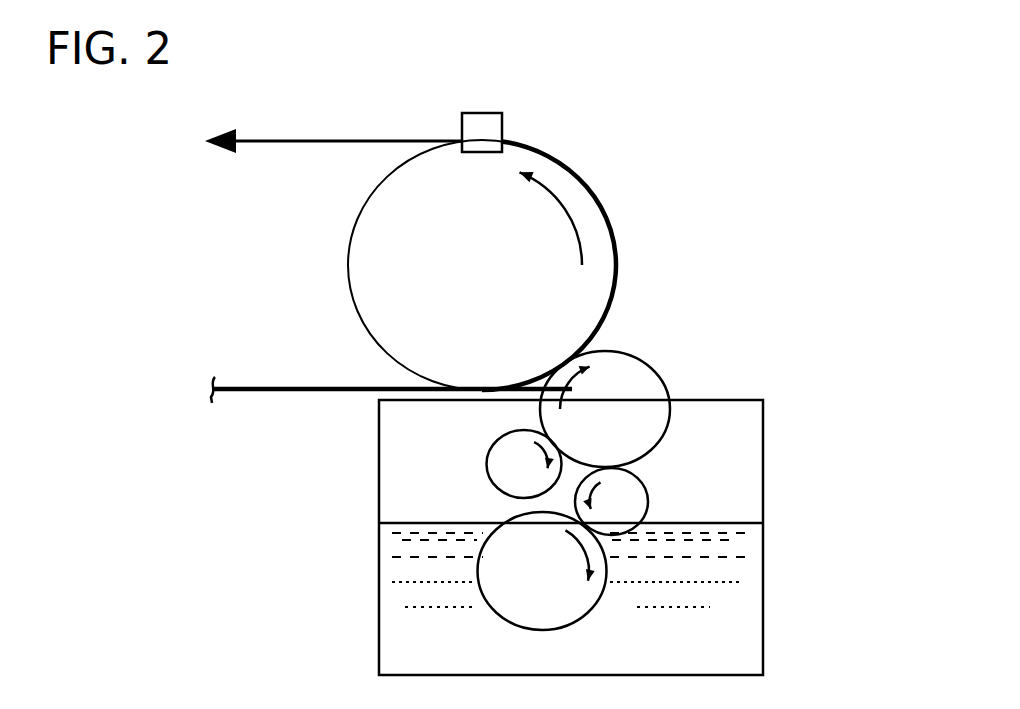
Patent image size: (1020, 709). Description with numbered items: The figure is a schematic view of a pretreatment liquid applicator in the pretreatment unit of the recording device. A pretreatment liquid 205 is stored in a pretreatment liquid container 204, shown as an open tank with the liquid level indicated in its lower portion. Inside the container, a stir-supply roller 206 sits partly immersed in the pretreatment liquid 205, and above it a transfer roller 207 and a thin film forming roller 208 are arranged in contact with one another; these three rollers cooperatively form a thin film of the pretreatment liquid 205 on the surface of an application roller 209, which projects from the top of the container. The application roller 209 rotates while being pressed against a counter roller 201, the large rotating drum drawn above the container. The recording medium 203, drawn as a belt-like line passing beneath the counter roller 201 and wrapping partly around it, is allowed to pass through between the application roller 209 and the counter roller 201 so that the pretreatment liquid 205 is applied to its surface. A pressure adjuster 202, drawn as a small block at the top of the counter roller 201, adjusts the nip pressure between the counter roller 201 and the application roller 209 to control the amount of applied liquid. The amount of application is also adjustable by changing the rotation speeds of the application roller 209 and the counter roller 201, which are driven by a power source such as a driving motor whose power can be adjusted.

The counter roller 201 is at (347, 258).
The pressure adjuster 202 is at (488, 113).
The recording medium 203 is at (590, 184).
The pretreatment liquid container 204 is at (379, 630).
The pretreatment liquid 205 is at (752, 632).
The stir-supply roller 206 is at (486, 612).
The transfer roller 207 is at (648, 485).
The thin film forming roller 208 is at (487, 455).
The application roller 209 is at (643, 362).